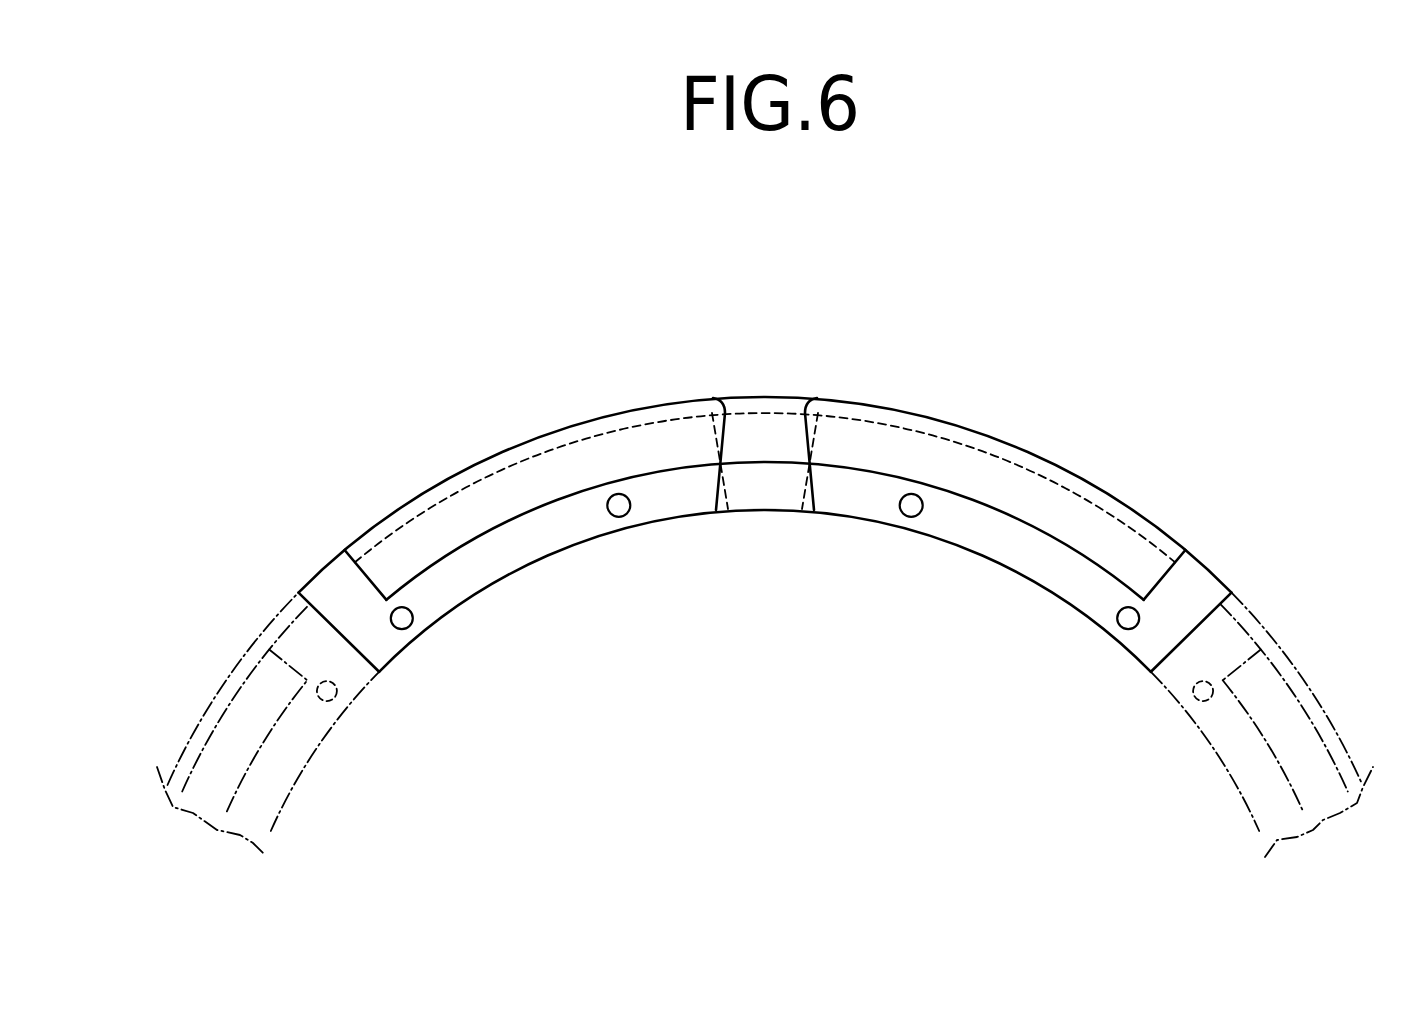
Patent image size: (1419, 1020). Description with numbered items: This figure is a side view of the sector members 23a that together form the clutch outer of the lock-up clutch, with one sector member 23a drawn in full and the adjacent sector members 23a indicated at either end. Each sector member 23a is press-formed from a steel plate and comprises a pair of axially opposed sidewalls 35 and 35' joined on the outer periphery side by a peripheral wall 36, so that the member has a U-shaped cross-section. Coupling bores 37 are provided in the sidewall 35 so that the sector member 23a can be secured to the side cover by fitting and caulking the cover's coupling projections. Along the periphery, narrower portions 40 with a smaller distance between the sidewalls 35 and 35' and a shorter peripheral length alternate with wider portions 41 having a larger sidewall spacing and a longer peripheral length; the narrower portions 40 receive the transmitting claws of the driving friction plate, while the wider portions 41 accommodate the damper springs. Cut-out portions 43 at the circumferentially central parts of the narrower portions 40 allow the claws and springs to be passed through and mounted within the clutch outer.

The sector member 23a is at (608, 411).
The sidewall 35 is at (765, 542).
The sidewall 35' is at (765, 601).
The peripheral wall 36 is at (1020, 445).
The coupling bore 37 is at (618, 506).
The narrower portion 40 is at (770, 418).
The wider portion 41 is at (872, 440).
The cut-out portion 43 is at (368, 580).